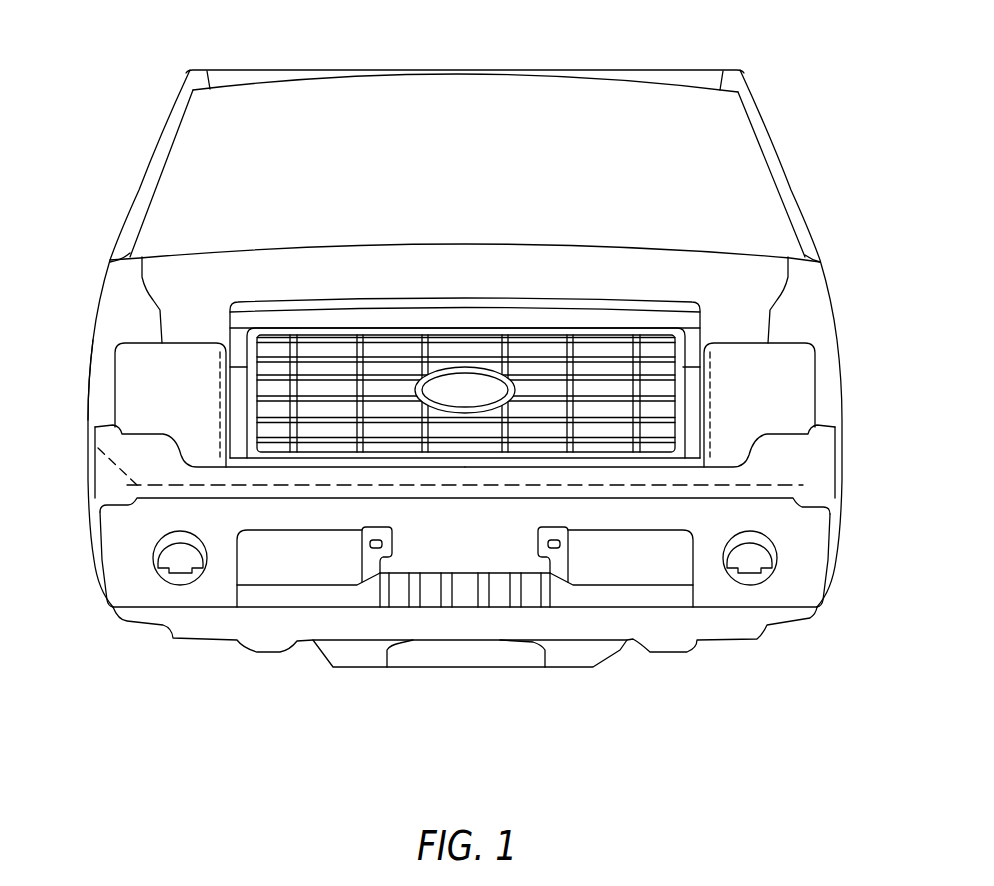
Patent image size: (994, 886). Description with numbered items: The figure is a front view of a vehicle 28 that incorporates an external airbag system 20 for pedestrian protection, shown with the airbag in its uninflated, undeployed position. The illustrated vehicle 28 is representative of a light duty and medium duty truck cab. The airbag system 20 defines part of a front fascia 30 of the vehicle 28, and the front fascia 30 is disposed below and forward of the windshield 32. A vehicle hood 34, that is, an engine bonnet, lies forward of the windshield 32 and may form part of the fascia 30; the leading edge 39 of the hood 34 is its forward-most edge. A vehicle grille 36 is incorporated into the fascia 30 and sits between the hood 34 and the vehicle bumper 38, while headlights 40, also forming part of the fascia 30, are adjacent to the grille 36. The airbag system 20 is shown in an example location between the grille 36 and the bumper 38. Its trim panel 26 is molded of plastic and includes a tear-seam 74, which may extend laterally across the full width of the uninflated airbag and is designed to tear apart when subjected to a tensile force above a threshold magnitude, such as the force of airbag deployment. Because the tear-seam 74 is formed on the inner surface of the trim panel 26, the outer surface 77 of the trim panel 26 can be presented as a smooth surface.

The external airbag system 20 is at (846, 459).
The trim panel 26 is at (825, 473).
The vehicle 28 is at (758, 90).
The front fascia 30 is at (70, 323).
The windshield 32 is at (293, 118).
The vehicle hood 34 is at (145, 292).
The vehicle grille 36 is at (700, 302).
The vehicle bumper 38 is at (120, 558).
The leading edge 39 is at (370, 290).
The headlights 40 is at (113, 390).
The tear-seam 74 is at (93, 447).
The outer surface 77 is at (108, 473).